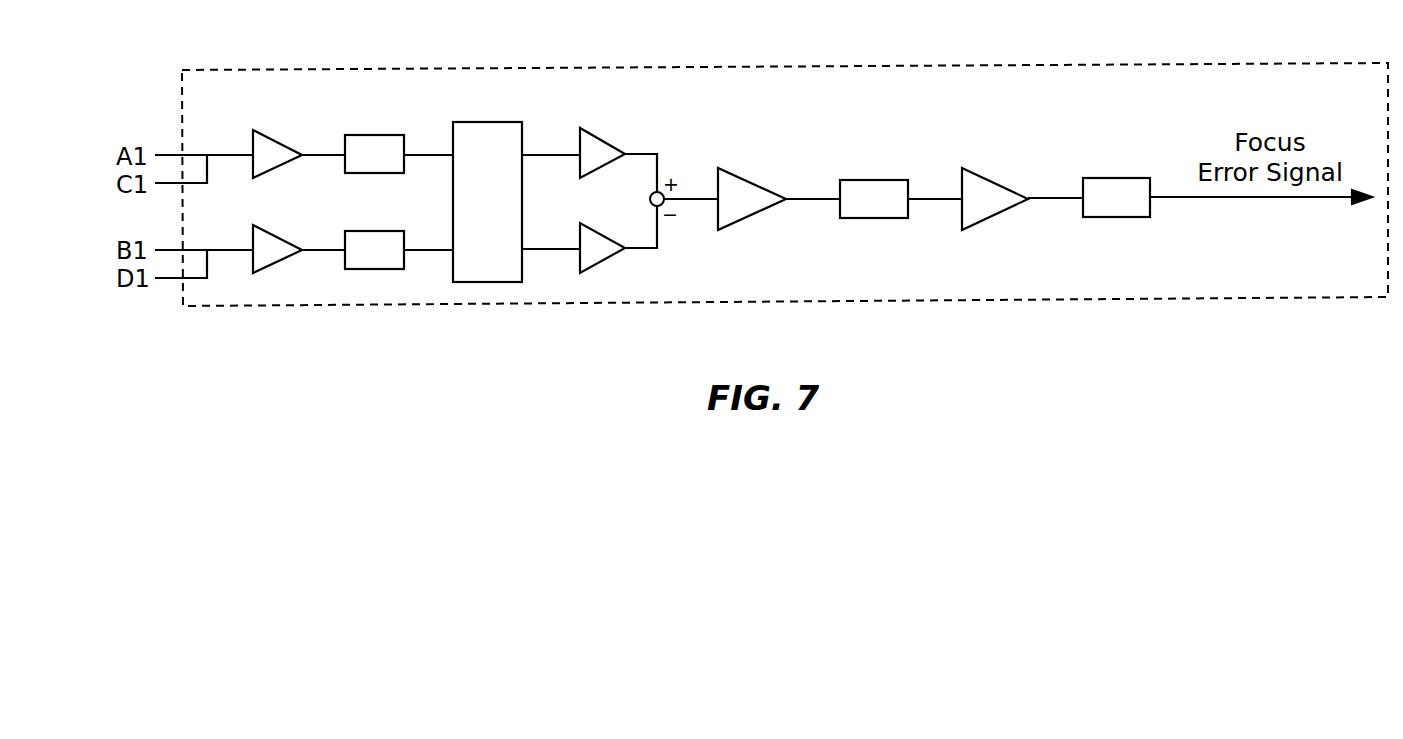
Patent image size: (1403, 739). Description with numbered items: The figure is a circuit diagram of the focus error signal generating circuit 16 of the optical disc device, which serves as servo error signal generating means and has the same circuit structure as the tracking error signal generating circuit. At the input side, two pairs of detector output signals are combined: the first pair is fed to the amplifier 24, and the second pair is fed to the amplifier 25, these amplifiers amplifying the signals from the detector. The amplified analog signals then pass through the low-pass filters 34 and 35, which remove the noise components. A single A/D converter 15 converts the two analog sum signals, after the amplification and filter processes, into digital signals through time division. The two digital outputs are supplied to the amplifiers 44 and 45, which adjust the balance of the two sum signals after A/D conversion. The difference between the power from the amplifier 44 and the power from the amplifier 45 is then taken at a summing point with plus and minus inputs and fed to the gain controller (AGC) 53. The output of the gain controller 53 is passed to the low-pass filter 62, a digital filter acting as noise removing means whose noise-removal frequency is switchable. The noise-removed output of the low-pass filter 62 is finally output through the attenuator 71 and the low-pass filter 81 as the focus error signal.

The focus error signal generating circuit 16 is at (1211, 63).
The amplifier 24 is at (276, 138).
The amplifier 25 is at (276, 233).
The low-pass filter 34 is at (372, 135).
The low-pass filter 35 is at (372, 231).
The A/D converter 15 is at (487, 122).
The amplifier 44 is at (603, 136).
The amplifier 45 is at (605, 264).
The gain controller (AGC) 53 is at (745, 179).
The low-pass filter 62 is at (873, 180).
The attenuator 71 is at (988, 179).
The low-pass filter 81 is at (1117, 178).